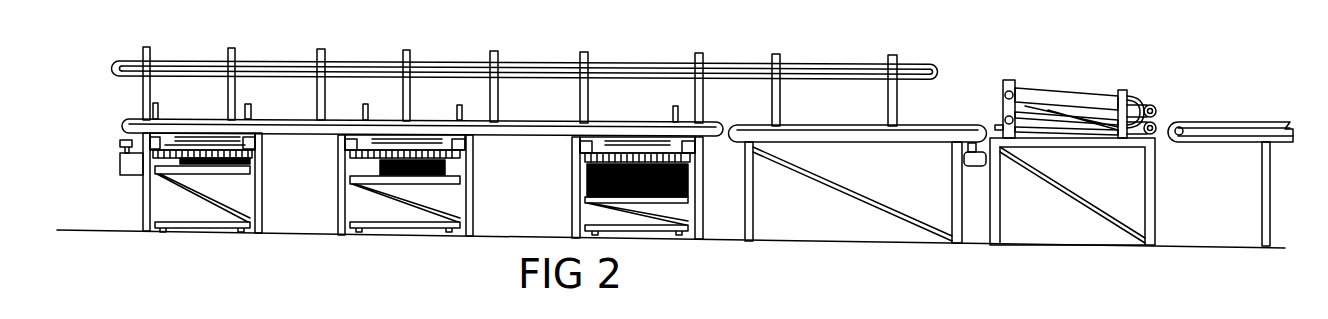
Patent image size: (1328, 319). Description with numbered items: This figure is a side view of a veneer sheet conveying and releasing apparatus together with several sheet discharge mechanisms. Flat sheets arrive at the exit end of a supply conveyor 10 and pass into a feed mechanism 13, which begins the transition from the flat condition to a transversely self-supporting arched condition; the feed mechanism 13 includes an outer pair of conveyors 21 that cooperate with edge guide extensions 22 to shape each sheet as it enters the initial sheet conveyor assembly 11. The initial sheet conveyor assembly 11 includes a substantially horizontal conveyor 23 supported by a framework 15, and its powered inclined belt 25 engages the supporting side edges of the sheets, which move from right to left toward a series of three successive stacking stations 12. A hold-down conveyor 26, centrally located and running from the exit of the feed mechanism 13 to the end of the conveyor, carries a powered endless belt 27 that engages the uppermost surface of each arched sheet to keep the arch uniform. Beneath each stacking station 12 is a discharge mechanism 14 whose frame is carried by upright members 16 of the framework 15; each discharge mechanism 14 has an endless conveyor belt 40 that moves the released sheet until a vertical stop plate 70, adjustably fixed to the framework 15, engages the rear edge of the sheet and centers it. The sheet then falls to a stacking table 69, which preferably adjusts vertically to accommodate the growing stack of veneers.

The supply conveyor 10 is at (1205, 125).
The initial sheet conveyor assembly 11 is at (506, 139).
The sheet stacking station 12 is at (193, 106).
The feed mechanism 13 is at (1058, 89).
The discharge mechanism 14 is at (341, 146).
The framework 15 is at (140, 202).
The upright member 16 is at (575, 200).
The outer pair of conveyors 21 is at (1075, 100).
The edge guide extension 22 is at (1130, 100).
The horizontal conveyor 23 is at (809, 123).
The belt 25 is at (122, 129).
The hold-down conveyor 26 is at (518, 59).
The endless belt 27 is at (470, 63).
The endless conveyor belt 40 is at (358, 160).
The stacking table 69 is at (412, 185).
The vertical stop plate 70 is at (250, 170).